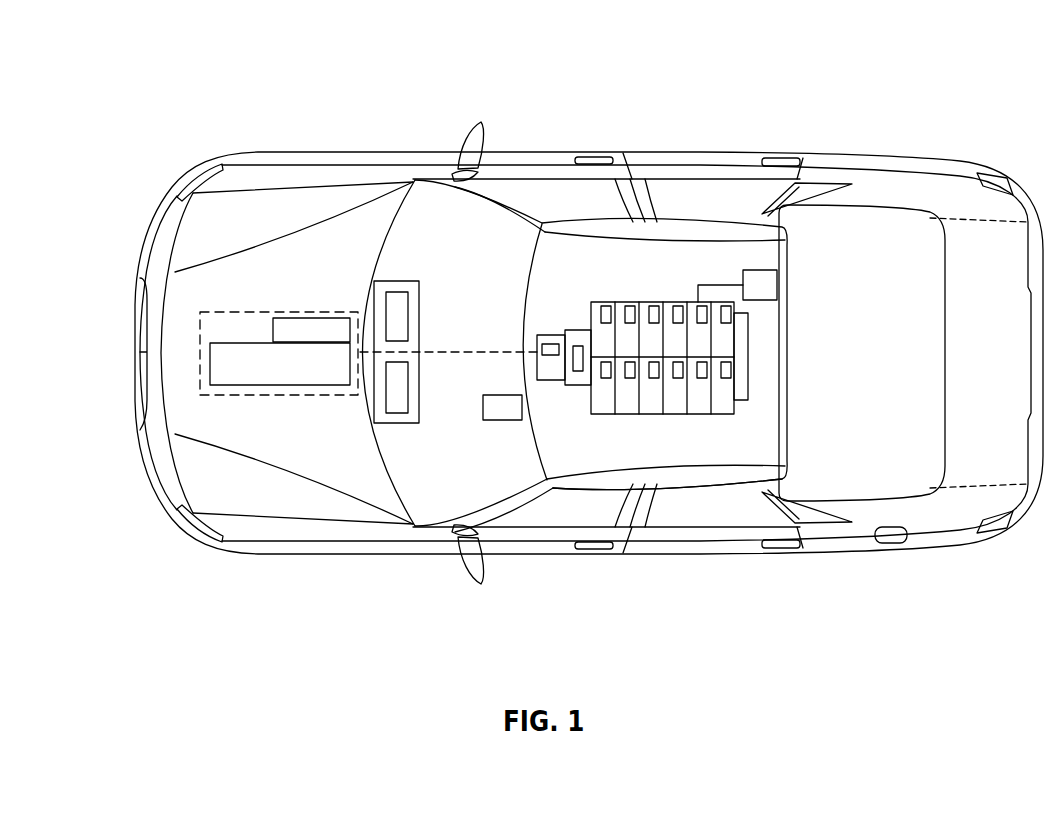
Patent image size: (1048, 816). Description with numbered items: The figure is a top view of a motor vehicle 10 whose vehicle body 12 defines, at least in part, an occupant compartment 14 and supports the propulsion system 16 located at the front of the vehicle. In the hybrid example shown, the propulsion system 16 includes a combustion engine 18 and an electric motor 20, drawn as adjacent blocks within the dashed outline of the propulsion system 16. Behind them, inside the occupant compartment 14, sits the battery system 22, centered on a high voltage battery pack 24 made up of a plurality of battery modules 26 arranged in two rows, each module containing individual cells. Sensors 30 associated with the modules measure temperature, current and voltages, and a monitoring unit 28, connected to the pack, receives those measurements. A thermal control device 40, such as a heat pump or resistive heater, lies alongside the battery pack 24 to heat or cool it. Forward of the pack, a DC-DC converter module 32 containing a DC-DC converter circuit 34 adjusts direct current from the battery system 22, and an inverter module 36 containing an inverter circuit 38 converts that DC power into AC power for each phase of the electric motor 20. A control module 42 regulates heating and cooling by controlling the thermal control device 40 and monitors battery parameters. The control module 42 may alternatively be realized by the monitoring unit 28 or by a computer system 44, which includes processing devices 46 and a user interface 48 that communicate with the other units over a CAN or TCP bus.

The motor vehicle 10 is at (131, 75).
The vehicle body 12 is at (641, 153).
The occupant compartment 14 is at (680, 472).
The propulsion system 16 is at (240, 312).
The combustion engine 18 is at (303, 388).
The electric motor 20 is at (327, 318).
The battery system 22 is at (617, 419).
The high voltage battery pack 24 is at (735, 340).
The battery modules 26 is at (621, 303).
The monitoring unit 28 is at (777, 284).
The sensors 30 is at (678, 303).
The DC-DC converter module 32 is at (582, 330).
The DC-DC converter circuit 34 is at (577, 386).
The inverter module 36 is at (543, 334).
The inverter circuit 38 is at (538, 347).
The thermal control device 40 is at (748, 385).
The control module 42 is at (502, 423).
The computer system 44 is at (407, 281).
The processing devices 46 is at (409, 318).
The user interface 48 is at (409, 390).